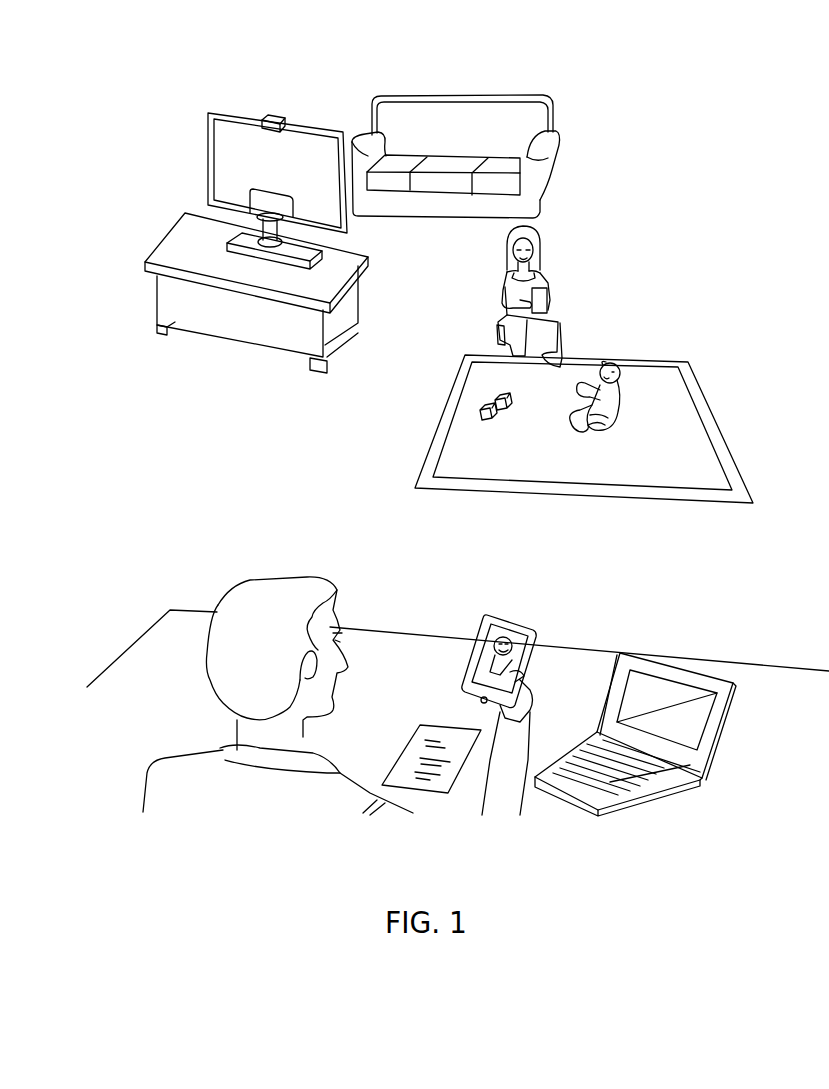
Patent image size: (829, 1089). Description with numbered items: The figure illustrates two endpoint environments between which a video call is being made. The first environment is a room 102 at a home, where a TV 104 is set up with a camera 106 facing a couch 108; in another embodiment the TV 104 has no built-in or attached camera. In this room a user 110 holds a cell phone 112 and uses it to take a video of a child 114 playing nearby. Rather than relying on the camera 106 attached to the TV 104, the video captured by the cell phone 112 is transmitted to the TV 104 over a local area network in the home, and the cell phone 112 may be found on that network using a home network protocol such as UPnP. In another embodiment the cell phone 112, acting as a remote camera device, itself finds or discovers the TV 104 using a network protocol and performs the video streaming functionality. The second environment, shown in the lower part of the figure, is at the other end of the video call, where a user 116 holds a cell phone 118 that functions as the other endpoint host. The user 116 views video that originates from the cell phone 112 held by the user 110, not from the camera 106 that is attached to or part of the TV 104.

The room 102 is at (152, 87).
The TV 104 is at (213, 110).
The camera 106 is at (275, 114).
The couch 108 is at (475, 98).
The user 110 is at (535, 230).
The cell phone 112 is at (548, 290).
The child 114 is at (612, 395).
The user 116 is at (147, 773).
The cell phone 118 is at (520, 618).